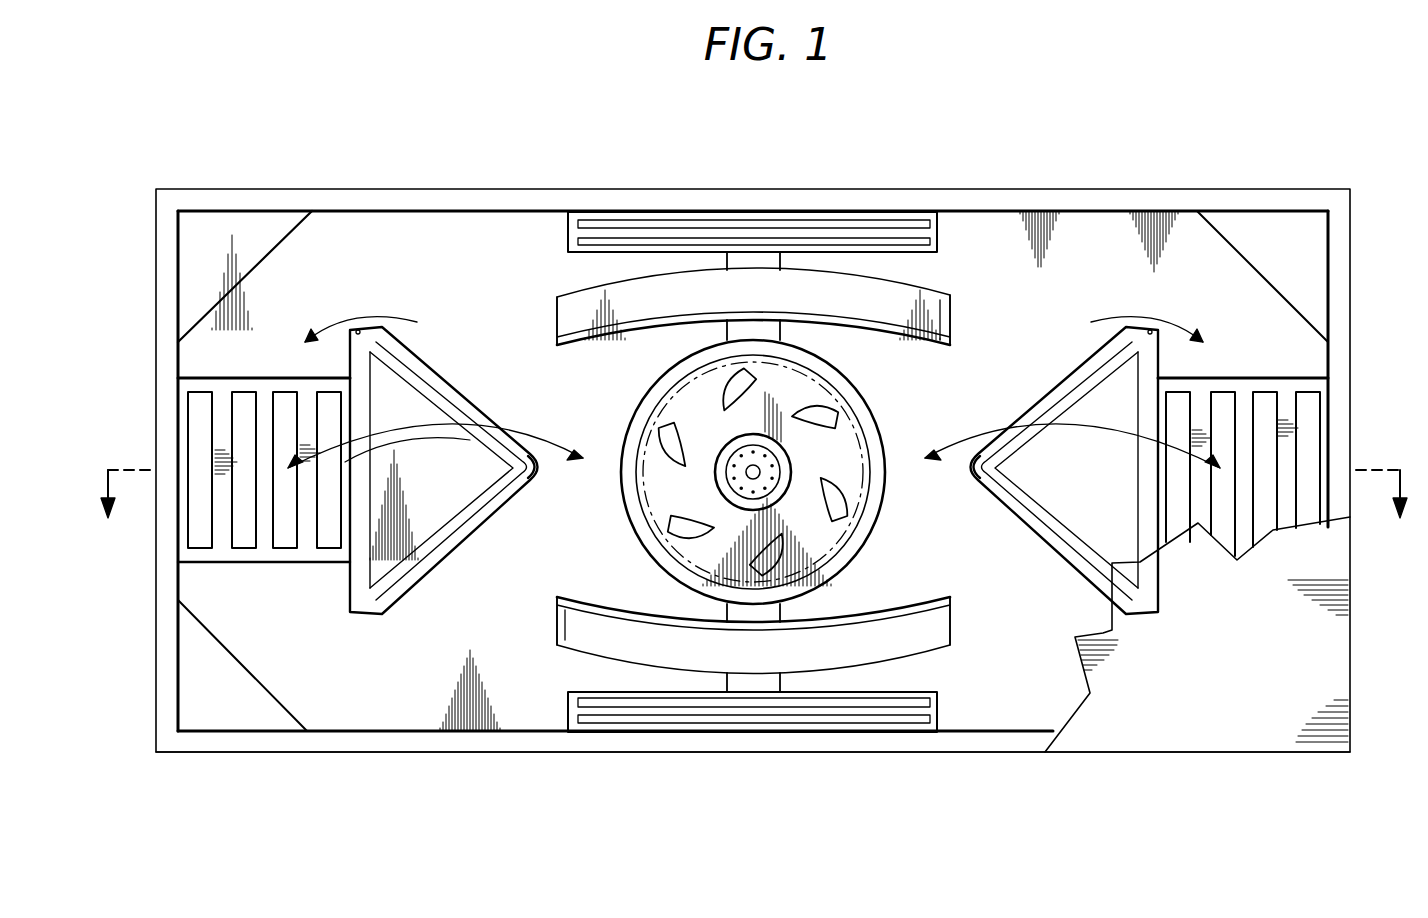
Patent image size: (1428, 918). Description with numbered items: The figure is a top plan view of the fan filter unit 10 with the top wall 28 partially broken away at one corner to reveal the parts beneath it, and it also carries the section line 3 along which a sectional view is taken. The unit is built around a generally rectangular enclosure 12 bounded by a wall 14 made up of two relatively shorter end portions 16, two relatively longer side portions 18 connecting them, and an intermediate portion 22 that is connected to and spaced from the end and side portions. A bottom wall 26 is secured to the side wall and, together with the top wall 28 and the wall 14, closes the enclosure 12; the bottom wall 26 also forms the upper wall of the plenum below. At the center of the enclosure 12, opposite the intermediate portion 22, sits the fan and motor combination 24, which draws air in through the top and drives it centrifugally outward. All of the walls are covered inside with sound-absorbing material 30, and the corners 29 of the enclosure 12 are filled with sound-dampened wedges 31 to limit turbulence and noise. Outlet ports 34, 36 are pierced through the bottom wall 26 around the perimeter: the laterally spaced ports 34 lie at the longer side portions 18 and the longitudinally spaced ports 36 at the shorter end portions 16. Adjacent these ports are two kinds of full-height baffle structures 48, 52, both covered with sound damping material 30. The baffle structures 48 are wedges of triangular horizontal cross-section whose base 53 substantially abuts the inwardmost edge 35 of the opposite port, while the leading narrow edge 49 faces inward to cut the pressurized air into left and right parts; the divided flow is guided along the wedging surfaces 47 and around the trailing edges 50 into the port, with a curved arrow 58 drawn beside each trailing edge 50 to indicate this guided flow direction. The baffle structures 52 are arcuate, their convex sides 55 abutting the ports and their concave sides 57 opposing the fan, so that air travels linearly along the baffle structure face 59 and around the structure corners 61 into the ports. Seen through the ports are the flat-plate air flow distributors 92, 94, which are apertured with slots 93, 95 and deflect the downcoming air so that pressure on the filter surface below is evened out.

The fan filter unit 10 is at (572, 146).
The enclosure 12 is at (360, 190).
The wall 14 is at (365, 755).
The end portions 16 is at (156, 330).
The side portions 18 is at (897, 202).
The intermediate portion 22 is at (830, 210).
The fan and motor combination 24 is at (845, 380).
The bottom wall 26 is at (426, 270).
The top wall 28 is at (1260, 715).
The corners 29 is at (228, 212).
The sound-absorbing material 30 is at (431, 232).
The sound-dampened wedges 31 is at (170, 245).
The outlet ports 34 is at (200, 545).
The inwardmost edge 35 is at (345, 462).
The outlet ports 36 is at (680, 715).
The wedging surfaces 47 is at (457, 390).
The baffle structures 48 is at (400, 390).
The leading narrow edge 49 is at (540, 468).
The trailing edges 50 is at (357, 330).
The baffle structures 52 is at (940, 310).
The base 53 is at (352, 598).
The convex sides 55 is at (870, 280).
The concave sides 57 is at (655, 335).
The pivoting direction 58 is at (350, 318).
The baffle structure face 59 is at (592, 332).
The structure corners 61 is at (550, 300).
The air flow distributors 92 is at (633, 215).
The slots 93 is at (722, 222).
The air flow distributors 94 is at (223, 443).
The slots 95 is at (238, 532).
The section line 3- 3 is at (752, 515).